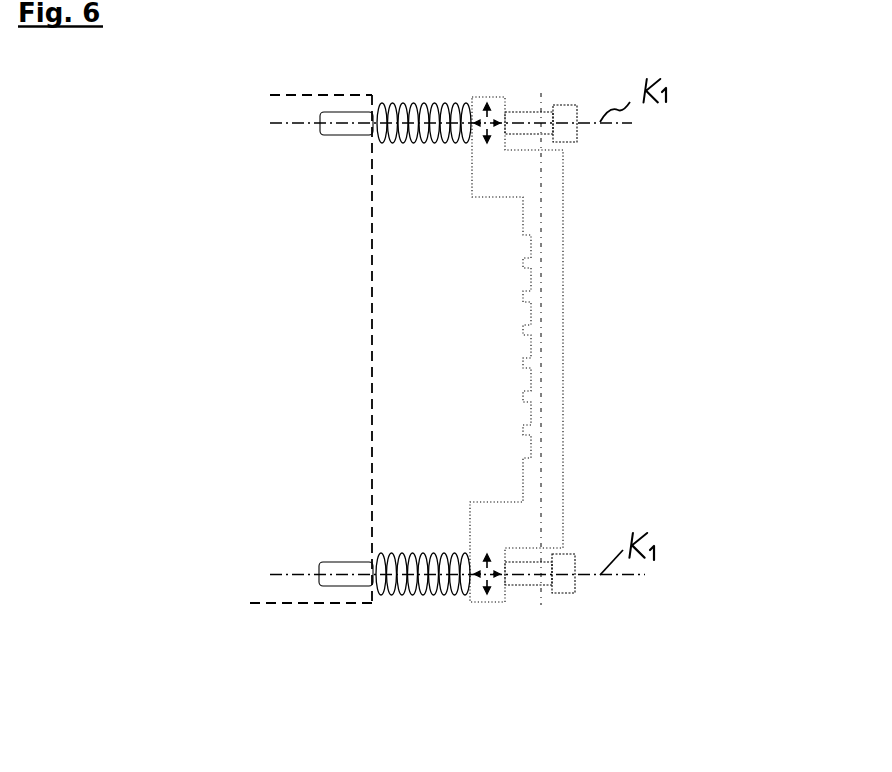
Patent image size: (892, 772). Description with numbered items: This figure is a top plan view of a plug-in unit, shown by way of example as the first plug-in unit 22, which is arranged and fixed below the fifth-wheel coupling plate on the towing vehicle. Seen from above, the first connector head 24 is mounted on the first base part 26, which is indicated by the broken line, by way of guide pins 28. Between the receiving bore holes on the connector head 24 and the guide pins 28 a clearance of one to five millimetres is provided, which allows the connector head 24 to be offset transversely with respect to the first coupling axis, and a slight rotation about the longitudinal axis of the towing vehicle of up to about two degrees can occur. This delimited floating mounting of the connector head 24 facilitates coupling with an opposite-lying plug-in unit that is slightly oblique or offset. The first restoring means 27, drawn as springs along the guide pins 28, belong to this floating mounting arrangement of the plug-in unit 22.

The first plug-in unit 22 is at (673, 448).
The first connector head 24 is at (597, 352).
The first base part 26 is at (370, 397).
The first restoring means 27 is at (425, 140).
The guide pins 28 is at (535, 66).